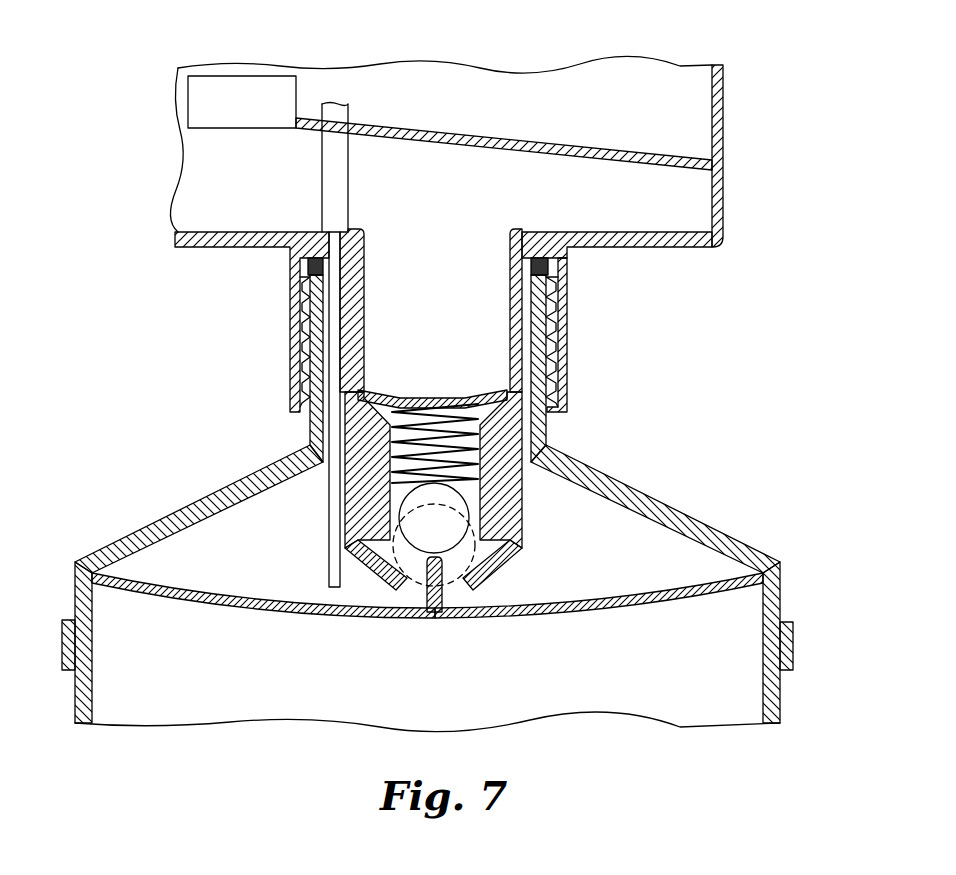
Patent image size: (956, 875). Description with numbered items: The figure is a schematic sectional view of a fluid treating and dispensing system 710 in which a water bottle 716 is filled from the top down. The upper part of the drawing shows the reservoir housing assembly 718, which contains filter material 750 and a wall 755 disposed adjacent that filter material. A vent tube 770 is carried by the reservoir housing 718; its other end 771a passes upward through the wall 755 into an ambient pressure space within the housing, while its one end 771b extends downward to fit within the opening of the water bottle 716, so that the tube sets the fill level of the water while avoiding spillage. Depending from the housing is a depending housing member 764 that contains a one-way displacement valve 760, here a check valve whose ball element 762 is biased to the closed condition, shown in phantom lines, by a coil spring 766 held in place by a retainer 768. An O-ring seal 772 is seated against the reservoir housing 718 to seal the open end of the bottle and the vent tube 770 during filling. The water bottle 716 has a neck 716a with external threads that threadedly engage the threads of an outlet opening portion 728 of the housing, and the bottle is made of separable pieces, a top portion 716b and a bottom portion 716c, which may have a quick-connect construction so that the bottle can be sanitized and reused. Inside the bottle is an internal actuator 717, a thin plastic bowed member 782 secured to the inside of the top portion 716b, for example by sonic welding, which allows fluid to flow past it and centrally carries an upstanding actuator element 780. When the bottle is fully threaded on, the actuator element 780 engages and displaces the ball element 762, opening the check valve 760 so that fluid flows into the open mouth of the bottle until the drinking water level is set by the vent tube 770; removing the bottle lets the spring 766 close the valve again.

The fluid treating and dispensing system 710 is at (455, 90).
The filter material 750 is at (253, 88).
The wall 755 is at (646, 158).
The vent tube 770 is at (346, 206).
The other end of vent tube 771a is at (330, 178).
The one end of vent tube 771b is at (330, 576).
The O-ring seal 772 is at (537, 260).
The reservoir housing assembly 718 is at (686, 248).
The outlet opening portion 728 is at (300, 299).
The depending housing member 764 is at (512, 282).
The water bottle 716 is at (744, 525).
The neck 716a is at (550, 356).
The top portion 716b is at (672, 518).
The bottom portion 716c is at (706, 727).
The actuator 717 is at (620, 605).
The bowed member 782 is at (510, 614).
The actuator element 780 is at (430, 598).
The one-way displacement valve 760 is at (522, 550).
The ball element 762 is at (470, 504).
The coil spring 766 is at (466, 414).
The retainer 768 is at (385, 392).